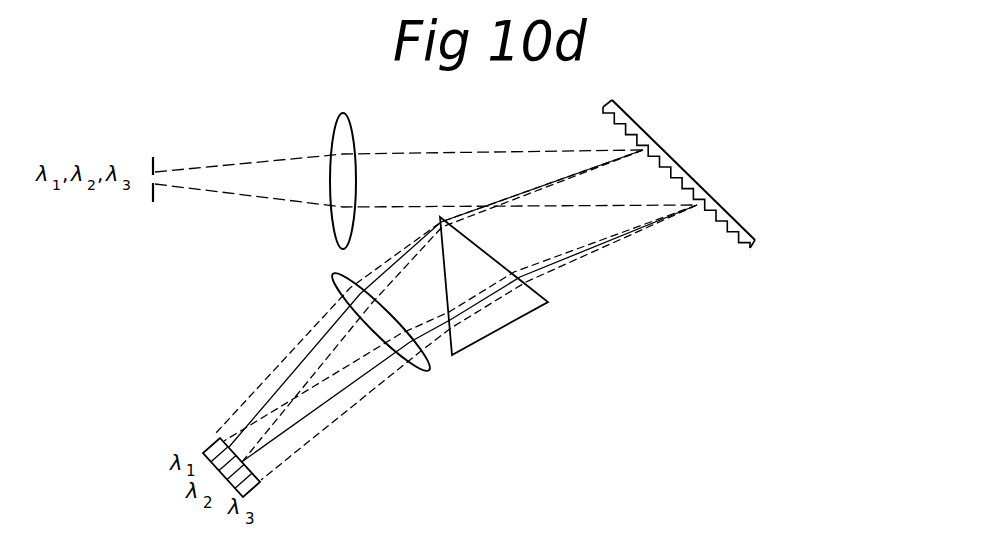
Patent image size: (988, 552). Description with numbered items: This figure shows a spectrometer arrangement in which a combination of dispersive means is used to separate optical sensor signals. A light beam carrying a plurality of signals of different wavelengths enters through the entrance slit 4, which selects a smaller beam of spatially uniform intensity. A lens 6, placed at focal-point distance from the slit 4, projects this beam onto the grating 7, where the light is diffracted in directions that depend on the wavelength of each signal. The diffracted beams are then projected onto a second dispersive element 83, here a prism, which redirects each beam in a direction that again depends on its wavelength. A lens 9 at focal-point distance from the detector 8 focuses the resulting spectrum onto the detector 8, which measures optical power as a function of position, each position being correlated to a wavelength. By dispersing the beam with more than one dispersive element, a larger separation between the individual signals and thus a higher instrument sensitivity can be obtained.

The entrance slit 4 is at (153, 158).
The lens 6 is at (352, 142).
The grating 7 is at (723, 218).
The second dispersive element 83 is at (503, 317).
The lens 9 is at (421, 367).
The detector 8 is at (212, 444).